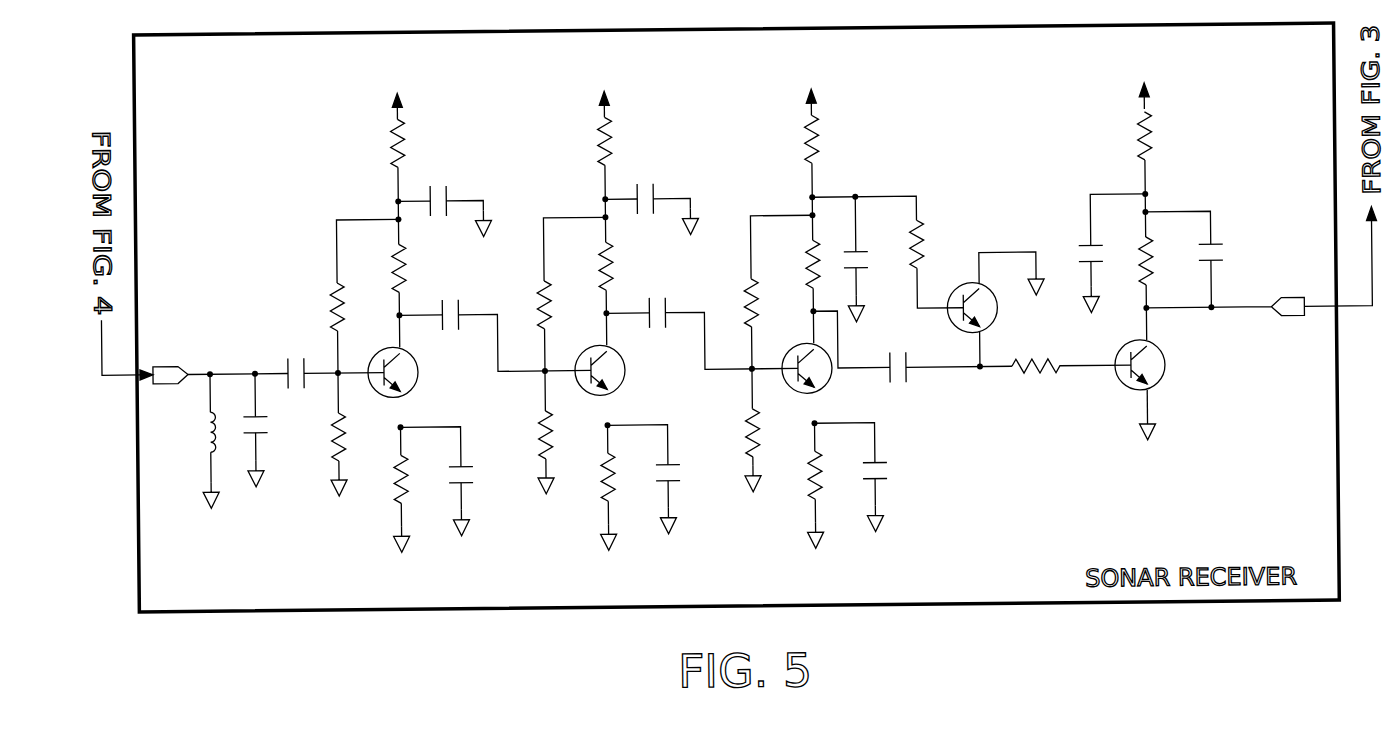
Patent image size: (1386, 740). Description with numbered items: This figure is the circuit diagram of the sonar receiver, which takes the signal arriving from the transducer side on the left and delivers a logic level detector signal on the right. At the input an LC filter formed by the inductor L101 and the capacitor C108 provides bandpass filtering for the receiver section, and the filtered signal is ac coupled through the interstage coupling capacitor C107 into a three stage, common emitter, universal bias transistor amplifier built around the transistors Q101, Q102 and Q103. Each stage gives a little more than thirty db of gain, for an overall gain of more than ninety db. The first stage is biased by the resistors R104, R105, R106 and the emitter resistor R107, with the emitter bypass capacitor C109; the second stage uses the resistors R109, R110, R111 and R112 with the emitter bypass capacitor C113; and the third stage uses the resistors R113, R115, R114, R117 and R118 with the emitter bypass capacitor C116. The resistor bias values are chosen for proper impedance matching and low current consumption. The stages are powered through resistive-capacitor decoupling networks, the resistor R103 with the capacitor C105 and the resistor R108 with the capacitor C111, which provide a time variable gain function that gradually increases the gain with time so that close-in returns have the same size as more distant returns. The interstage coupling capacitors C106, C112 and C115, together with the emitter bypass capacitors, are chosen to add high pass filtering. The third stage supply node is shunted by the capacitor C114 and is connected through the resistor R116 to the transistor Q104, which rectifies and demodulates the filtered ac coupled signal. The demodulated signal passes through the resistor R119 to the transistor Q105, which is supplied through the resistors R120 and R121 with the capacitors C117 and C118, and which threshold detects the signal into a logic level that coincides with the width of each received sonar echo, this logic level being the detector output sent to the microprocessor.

The inductor L101 is at (213, 432).
The interstage coupling capacitor C107 is at (285, 365).
The capacitor C108 is at (252, 437).
The decoupling resistor R103 is at (393, 138).
The resistor R104 is at (405, 265).
The decoupling capacitor C105 is at (448, 192).
The bias resistor R105 is at (337, 292).
The bias resistor R106 is at (332, 450).
The interstage coupling capacitor C106 is at (465, 306).
The transistor Q101 is at (383, 352).
The resistor R107 is at (395, 500).
The emitter bypass capacitor C109 is at (472, 485).
The decoupling resistor R108 is at (615, 152).
The resistor R109 is at (612, 267).
The decoupling capacitor C111 is at (660, 192).
The bias resistor R110 is at (553, 314).
The bias resistor R111 is at (538, 422).
The interstage coupling capacitor C112 is at (672, 308).
The transistor Q102 is at (628, 385).
The resistor R112 is at (602, 495).
The emitter bypass capacitor C113 is at (660, 488).
The resistor R113 is at (823, 157).
The resistor R115 is at (818, 245).
The bias resistor R114 is at (760, 318).
The bias resistor R117 is at (741, 428).
The resistor R116 is at (925, 228).
The capacitor C114 is at (868, 278).
The transistor Q103 is at (830, 390).
The resistor R118 is at (810, 487).
The emitter bypass capacitor C116 is at (886, 488).
The interstage coupling capacitor C115 is at (933, 386).
The transistor Q104 is at (998, 324).
The resistor R119 is at (1053, 378).
The resistor R120 is at (1157, 138).
The resistor R121 is at (1155, 264).
The capacitor C117 is at (1088, 250).
The capacitor C118 is at (1218, 251).
The transistor Q105 is at (1165, 385).